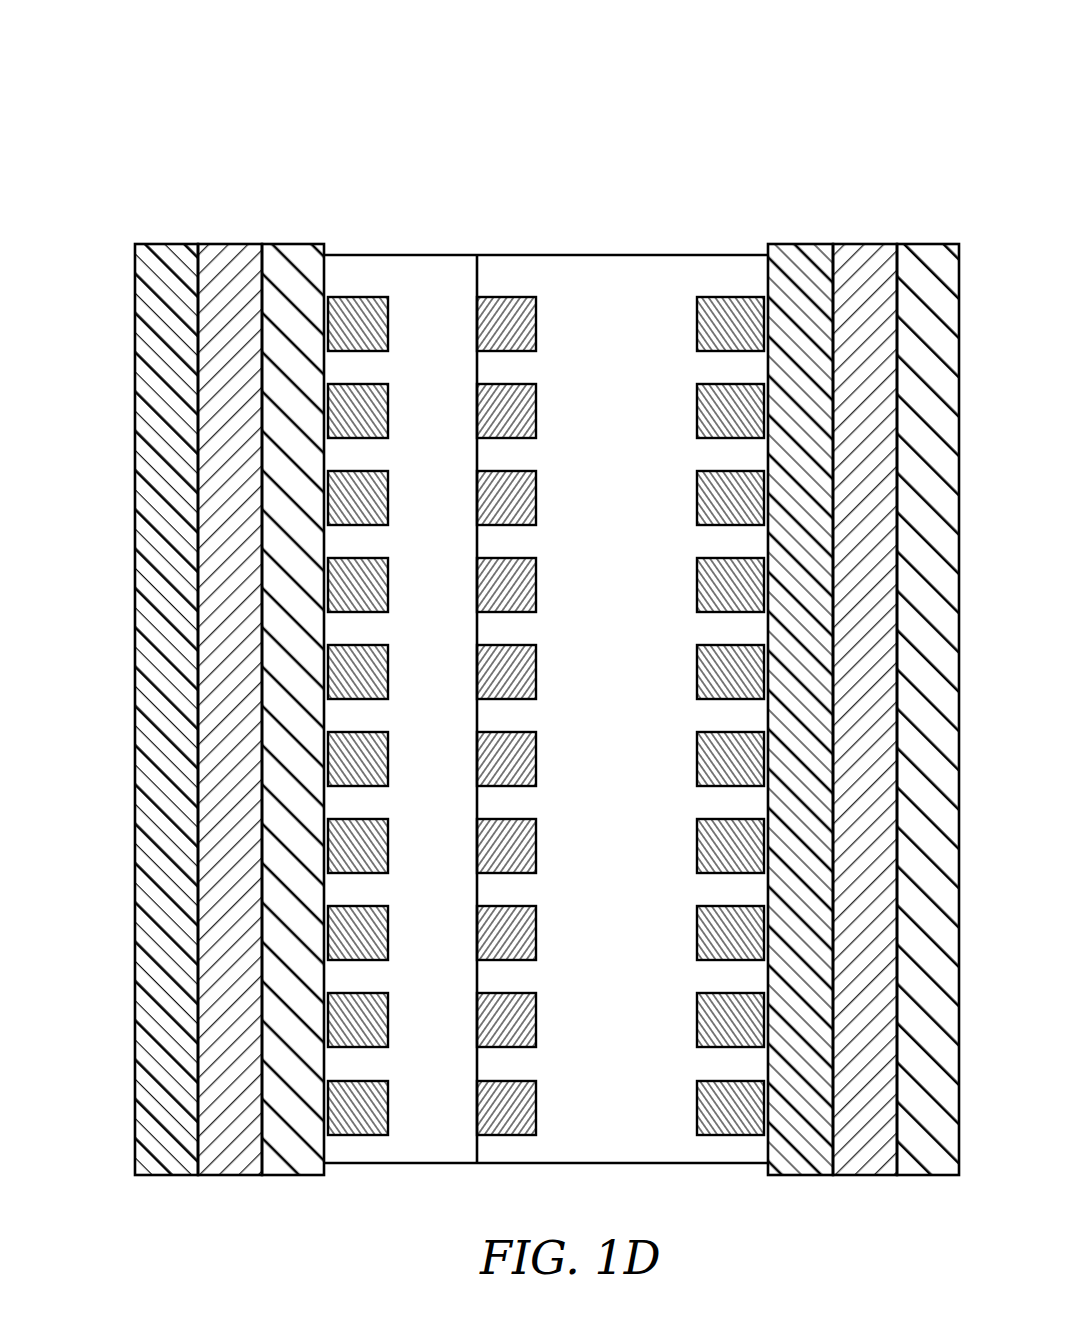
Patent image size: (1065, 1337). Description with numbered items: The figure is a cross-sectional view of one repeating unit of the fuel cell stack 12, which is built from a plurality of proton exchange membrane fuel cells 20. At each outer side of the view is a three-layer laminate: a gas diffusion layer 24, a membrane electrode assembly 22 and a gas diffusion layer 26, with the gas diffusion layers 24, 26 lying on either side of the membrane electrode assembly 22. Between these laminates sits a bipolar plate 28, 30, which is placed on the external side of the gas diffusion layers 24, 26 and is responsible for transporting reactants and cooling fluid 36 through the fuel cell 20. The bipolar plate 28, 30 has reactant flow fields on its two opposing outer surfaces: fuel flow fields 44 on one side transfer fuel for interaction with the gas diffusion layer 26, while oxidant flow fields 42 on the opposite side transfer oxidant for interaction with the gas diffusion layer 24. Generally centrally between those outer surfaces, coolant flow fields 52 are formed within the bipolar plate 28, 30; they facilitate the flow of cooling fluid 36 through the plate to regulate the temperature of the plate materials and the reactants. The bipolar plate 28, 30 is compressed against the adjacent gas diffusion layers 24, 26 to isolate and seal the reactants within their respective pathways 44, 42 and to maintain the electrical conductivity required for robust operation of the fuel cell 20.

The fuel cell stack 12 is at (185, 140).
The fuel cell 20 is at (520, 632).
The membrane electrode assembly 22 is at (233, 250).
The gas diffusion layer 24 is at (170, 246).
The gas diffusion layer 26 is at (290, 250).
The bipolar plate 28 is at (561, 205).
The bipolar plate 30 is at (548, 640).
The cooling fluid 36 is at (493, 322).
The oxidant flow fields 42 is at (737, 332).
The fuel flow fields 44 is at (360, 322).
The coolant flow fields 52 is at (532, 326).